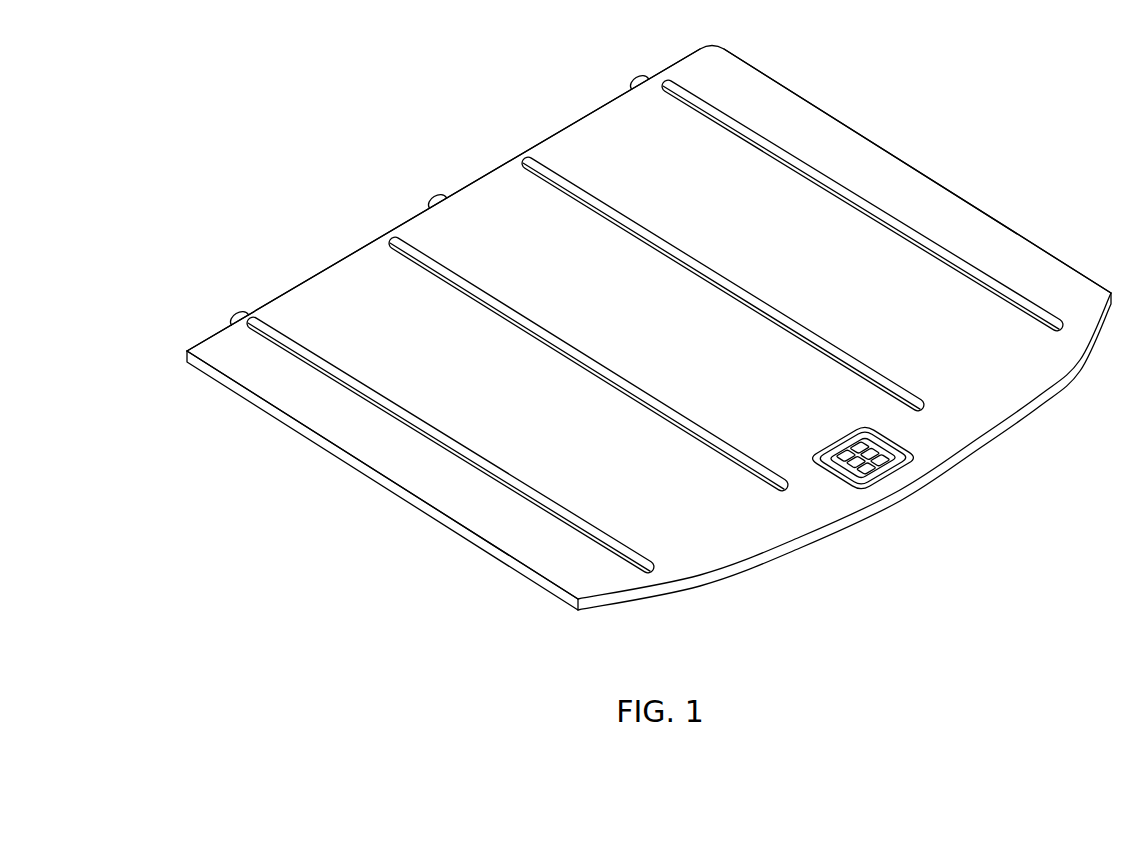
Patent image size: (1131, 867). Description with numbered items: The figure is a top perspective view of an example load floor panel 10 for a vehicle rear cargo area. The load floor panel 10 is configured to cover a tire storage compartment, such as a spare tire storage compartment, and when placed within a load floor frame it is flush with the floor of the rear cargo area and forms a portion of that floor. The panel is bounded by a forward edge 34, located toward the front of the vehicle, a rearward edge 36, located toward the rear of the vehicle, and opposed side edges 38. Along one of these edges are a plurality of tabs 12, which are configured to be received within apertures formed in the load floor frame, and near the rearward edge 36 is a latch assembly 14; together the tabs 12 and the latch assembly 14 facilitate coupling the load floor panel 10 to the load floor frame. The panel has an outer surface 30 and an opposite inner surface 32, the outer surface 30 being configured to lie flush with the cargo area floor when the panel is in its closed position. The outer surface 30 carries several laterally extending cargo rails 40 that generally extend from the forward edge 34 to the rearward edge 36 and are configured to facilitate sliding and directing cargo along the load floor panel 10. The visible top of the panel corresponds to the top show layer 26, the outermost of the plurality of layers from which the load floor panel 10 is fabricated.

The load floor panel 10 is at (268, 98).
The tabs 12 is at (640, 73).
The latch assembly 14 is at (918, 448).
The top show layer 26 is at (825, 228).
The outer surface 30 is at (597, 140).
The inner surface 32 is at (514, 580).
The forward edge 34 is at (346, 258).
The rearward edge 36 is at (828, 535).
The side edges 38 is at (1004, 222).
The cargo rails 40 is at (863, 200).